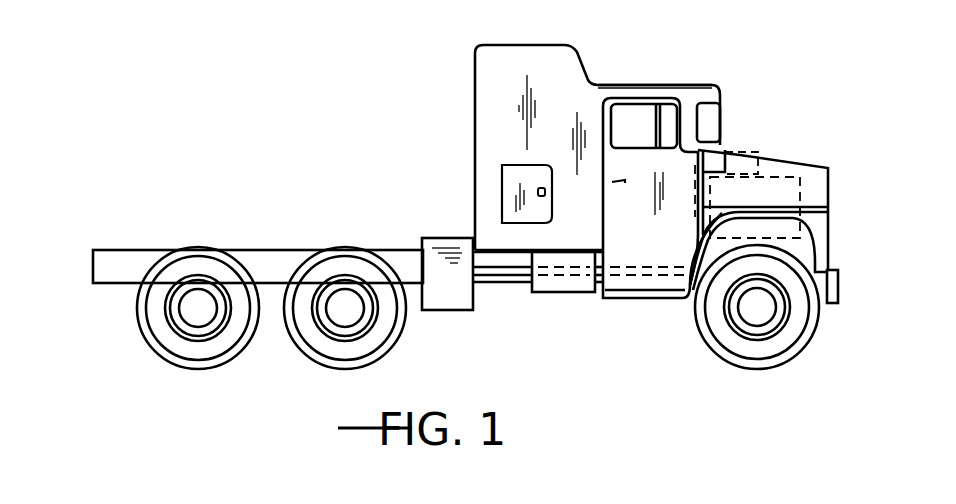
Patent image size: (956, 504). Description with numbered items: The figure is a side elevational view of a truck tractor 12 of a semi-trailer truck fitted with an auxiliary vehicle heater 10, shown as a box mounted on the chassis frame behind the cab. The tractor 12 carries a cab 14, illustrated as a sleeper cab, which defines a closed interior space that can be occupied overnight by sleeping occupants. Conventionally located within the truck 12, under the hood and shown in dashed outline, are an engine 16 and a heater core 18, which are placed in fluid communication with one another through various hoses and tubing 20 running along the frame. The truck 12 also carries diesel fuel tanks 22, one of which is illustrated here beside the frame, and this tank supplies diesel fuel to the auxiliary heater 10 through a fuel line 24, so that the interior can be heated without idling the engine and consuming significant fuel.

The auxiliary vehicle heater 10 is at (437, 238).
The tractor 12 is at (735, 58).
The cab 14 is at (642, 85).
The engine 16 is at (797, 150).
The heater core 18 is at (742, 155).
The hoses and tubing 20 is at (515, 283).
The diesel fuel tank 22 is at (566, 280).
The fuel line 24 is at (487, 305).